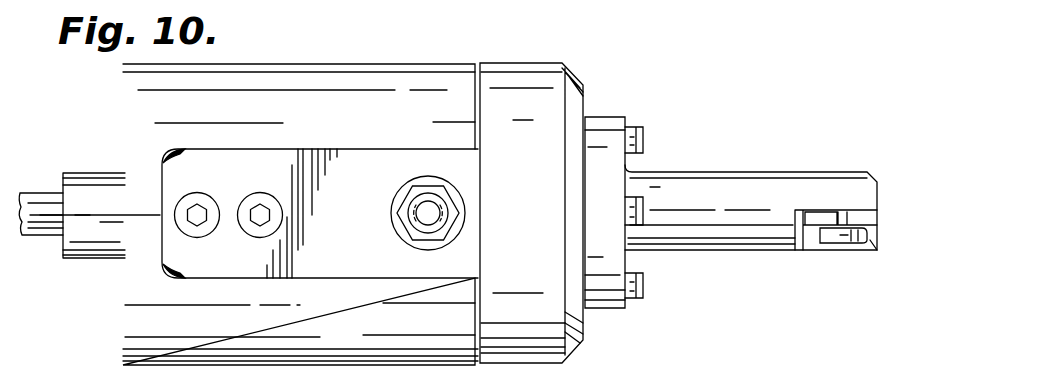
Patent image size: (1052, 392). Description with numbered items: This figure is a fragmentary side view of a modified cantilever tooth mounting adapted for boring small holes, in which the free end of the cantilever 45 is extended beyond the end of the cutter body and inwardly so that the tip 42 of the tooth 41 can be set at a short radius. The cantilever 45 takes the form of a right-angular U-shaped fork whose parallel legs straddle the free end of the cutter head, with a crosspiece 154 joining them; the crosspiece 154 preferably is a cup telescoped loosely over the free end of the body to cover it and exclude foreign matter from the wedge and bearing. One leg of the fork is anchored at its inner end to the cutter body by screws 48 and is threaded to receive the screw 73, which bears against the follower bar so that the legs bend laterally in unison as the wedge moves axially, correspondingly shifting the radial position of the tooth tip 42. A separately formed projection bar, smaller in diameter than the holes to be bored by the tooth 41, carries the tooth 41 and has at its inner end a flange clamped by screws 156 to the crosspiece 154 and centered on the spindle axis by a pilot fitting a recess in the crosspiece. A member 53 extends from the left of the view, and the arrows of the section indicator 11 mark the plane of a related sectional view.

The section line indicator for FIG. 11 is at (33, 170).
The tooth 41 is at (831, 227).
The tip of the tooth 42 is at (823, 213).
The cantilever 45 is at (588, 107).
The screws 48 is at (250, 232).
The shaft 53 is at (47, 196).
The screw 73 is at (421, 229).
The crosspiece 154 is at (572, 310).
The screws 156 is at (646, 140).